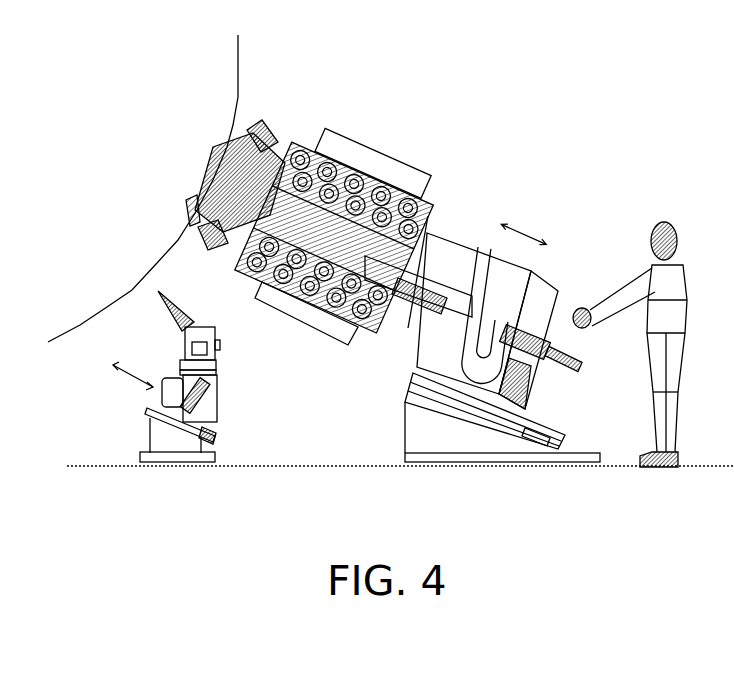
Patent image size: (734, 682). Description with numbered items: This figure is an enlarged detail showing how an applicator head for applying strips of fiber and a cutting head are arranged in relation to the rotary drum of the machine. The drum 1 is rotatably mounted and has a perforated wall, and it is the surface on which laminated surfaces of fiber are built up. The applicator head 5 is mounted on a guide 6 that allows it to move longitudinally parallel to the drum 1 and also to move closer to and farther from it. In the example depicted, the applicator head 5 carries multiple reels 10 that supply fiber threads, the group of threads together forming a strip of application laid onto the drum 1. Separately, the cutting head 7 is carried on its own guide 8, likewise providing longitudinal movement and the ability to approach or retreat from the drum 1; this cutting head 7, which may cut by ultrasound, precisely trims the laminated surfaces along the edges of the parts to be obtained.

The drum 1 is at (238, 77).
The applicator head 5 is at (468, 198).
The guide 6 is at (462, 438).
The cutting head 7 is at (226, 393).
The guide 8 is at (173, 437).
The reels 10 is at (362, 195).